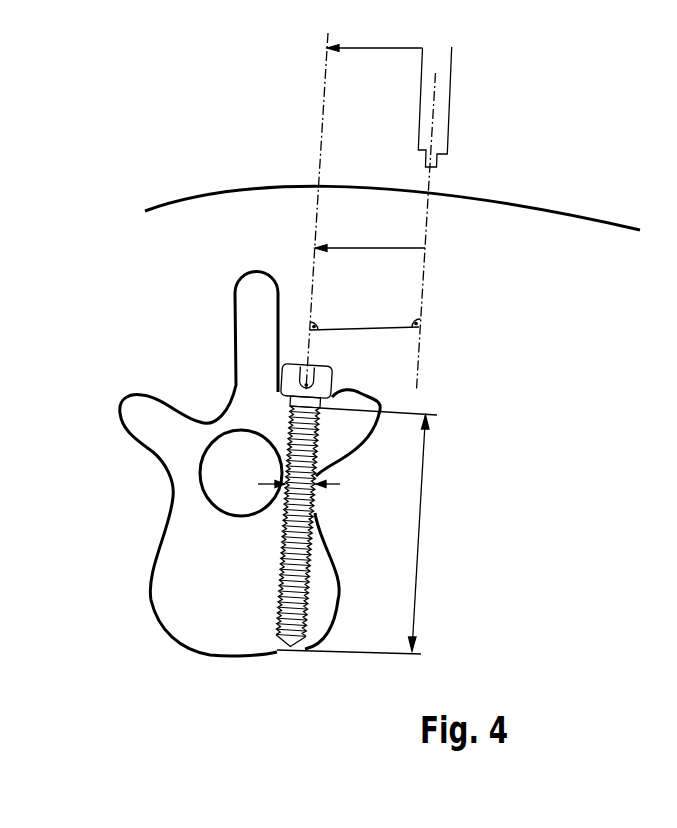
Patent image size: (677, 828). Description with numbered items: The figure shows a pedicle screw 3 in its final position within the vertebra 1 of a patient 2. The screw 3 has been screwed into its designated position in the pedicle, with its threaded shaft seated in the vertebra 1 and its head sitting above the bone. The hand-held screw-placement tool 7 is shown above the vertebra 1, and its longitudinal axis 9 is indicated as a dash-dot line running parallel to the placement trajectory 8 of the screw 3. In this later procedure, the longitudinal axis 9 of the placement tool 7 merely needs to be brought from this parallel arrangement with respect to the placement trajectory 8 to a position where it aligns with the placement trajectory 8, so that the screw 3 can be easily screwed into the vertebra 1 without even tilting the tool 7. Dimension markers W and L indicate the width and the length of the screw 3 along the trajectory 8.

The vertebra 1 is at (198, 380).
The patient 2 is at (210, 190).
The pedicle screw 3 is at (320, 382).
The screw-placement tool 7 is at (452, 78).
The placement trajectory 8 is at (323, 95).
The longitudinal axis of the tool 9 is at (418, 360).
The screw width (diameter) W is at (312, 487).
The screw length L is at (358, 531).